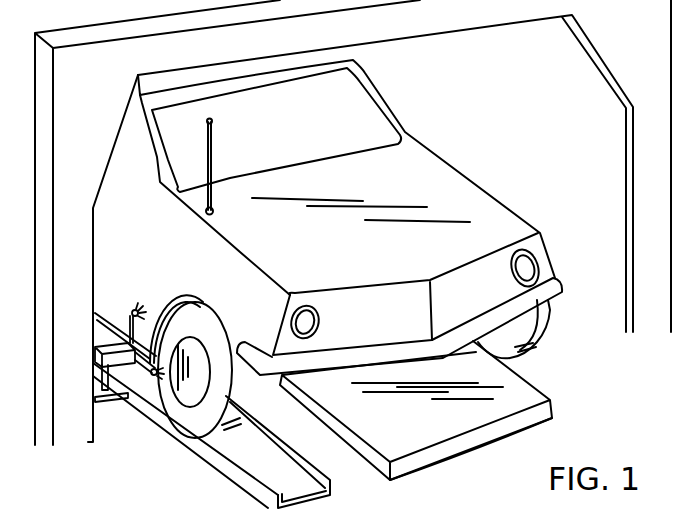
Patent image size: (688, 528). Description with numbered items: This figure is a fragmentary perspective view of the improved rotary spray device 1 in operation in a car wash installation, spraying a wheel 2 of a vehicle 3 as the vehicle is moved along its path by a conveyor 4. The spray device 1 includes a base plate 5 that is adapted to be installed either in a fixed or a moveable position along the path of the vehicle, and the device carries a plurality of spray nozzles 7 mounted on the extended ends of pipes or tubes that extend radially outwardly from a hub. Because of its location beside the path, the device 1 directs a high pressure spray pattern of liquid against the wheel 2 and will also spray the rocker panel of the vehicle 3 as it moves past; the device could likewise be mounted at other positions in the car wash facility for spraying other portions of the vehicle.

The rotary spray device 1 is at (125, 403).
The wheel 2 is at (192, 395).
The vehicle 3 is at (468, 194).
The conveyor 4 is at (468, 420).
The base plate 5 is at (98, 407).
The spray nozzles 7 is at (135, 307).